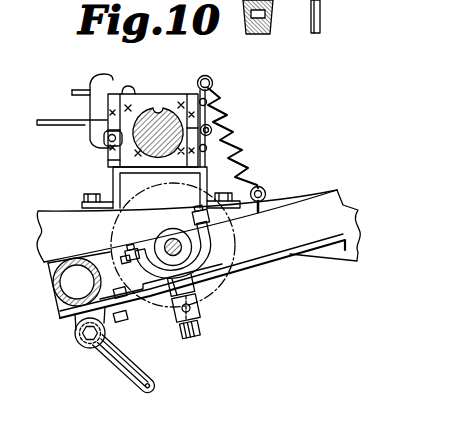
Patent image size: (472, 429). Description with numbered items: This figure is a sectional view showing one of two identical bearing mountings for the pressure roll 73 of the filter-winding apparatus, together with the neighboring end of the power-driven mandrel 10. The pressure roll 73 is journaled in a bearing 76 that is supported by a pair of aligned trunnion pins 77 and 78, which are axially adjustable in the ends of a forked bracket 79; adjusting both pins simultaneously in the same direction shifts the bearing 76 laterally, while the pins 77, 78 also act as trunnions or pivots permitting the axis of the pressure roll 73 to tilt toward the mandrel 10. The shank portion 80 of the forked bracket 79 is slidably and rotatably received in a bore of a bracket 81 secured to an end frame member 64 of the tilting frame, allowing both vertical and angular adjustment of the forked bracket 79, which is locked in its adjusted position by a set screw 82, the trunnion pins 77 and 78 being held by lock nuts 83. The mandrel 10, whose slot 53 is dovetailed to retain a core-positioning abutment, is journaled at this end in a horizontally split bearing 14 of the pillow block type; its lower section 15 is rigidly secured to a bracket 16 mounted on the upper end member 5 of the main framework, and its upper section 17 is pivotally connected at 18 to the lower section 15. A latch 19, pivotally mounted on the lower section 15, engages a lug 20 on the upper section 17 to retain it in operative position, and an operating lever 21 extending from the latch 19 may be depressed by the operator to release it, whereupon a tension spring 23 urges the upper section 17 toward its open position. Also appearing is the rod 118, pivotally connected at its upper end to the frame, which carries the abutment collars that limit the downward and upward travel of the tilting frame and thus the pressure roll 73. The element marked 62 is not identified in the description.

The upper end member 5 is at (50, 239).
The power-driven mandrel 10 is at (155, 112).
The horizontally split bearing 14 is at (106, 118).
The lower section 15 is at (118, 157).
The bracket 16 is at (112, 180).
The upper section 17 is at (190, 96).
The pivotal connection 18 is at (210, 128).
The latch 19 is at (100, 108).
The lug 20 is at (118, 93).
The operating lever 21 is at (48, 125).
The tension spring 23 is at (215, 138).
The slot 53 is at (162, 97).
The bearing 62 is at (57, 302).
The end frame member 64 is at (300, 229).
The pressure roll 73 is at (188, 170).
The bearing 76 is at (172, 228).
The trunnion pin 77 is at (123, 256).
The trunnion pin 78 is at (226, 244).
The forked bracket 79 is at (170, 310).
The shank portion 80 is at (202, 332).
The bracket 81 is at (152, 312).
The set screw 82 is at (204, 308).
The lock nuts 83 is at (130, 250).
The rod 118 is at (128, 381).